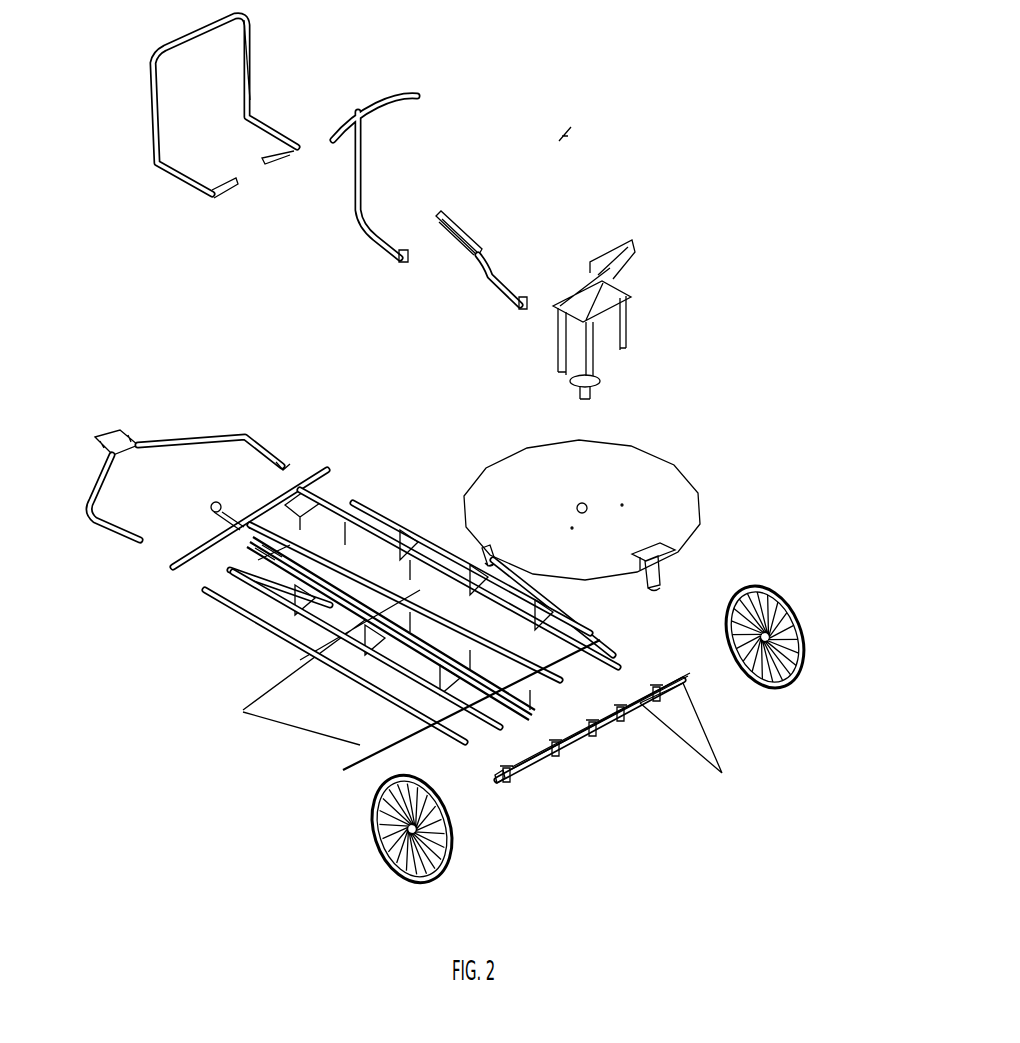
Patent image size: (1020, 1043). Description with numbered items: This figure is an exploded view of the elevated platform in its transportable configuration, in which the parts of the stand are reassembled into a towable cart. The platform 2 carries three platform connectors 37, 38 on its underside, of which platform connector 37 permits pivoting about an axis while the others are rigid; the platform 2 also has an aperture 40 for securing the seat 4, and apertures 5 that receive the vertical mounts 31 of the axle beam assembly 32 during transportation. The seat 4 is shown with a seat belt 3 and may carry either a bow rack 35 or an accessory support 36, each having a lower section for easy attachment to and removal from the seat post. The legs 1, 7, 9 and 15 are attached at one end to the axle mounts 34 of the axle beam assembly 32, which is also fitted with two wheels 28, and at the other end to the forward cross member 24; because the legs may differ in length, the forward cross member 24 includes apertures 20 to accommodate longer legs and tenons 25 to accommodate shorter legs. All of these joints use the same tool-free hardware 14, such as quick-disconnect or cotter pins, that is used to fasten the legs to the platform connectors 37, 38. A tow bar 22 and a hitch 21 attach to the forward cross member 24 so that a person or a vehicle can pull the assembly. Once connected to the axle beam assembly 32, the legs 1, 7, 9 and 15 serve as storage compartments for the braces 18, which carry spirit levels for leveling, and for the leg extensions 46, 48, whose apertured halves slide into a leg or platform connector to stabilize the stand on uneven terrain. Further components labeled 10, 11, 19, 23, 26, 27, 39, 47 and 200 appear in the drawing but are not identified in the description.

The leg 1 is at (310, 635).
The platform 2 is at (548, 487).
The seat belt 3 is at (560, 343).
The seat 4 is at (590, 290).
The apertures 5 is at (658, 482).
The leg 7 is at (403, 563).
The leg 9 is at (262, 625).
The center rail 10 is at (420, 710).
The coupling 11 is at (260, 550).
The connector 14 is at (722, 773).
The leg 15 is at (400, 527).
The braces 18 is at (290, 512).
The lower rail 19 is at (223, 610).
The apertures 20 is at (200, 538).
The hitch 21 is at (100, 430).
The tow bar 22 is at (220, 437).
The handle end 23 is at (277, 450).
The forward cross member 24 is at (303, 510).
The tenons 25 is at (353, 500).
The cross tube 26 is at (397, 505).
The diagonal brace 27 is at (457, 748).
The wheels 28 is at (793, 605).
The vertical mounts 31 is at (580, 748).
The axle beam assembly 32 is at (497, 783).
The axle mounts 34 is at (497, 762).
The bow rack 35 is at (483, 280).
The accessory support 36 is at (353, 167).
The platform connector 37 is at (670, 517).
The platform connector 38 is at (567, 578).
The base plate 39 is at (590, 356).
The aperture 40 is at (586, 504).
The leg extension 46 is at (150, 122).
The handle upright 47 is at (250, 100).
The leg extension 48 is at (238, 531).
The fastener 200 is at (565, 133).